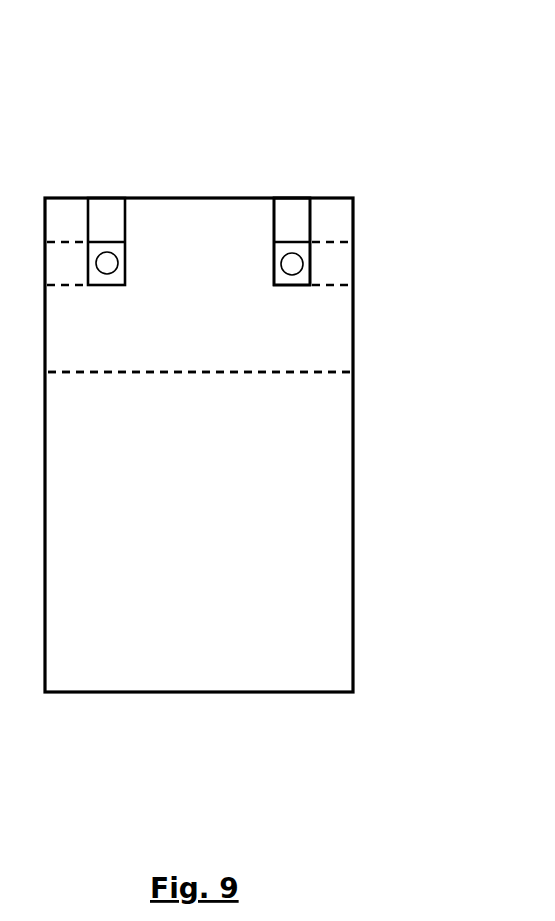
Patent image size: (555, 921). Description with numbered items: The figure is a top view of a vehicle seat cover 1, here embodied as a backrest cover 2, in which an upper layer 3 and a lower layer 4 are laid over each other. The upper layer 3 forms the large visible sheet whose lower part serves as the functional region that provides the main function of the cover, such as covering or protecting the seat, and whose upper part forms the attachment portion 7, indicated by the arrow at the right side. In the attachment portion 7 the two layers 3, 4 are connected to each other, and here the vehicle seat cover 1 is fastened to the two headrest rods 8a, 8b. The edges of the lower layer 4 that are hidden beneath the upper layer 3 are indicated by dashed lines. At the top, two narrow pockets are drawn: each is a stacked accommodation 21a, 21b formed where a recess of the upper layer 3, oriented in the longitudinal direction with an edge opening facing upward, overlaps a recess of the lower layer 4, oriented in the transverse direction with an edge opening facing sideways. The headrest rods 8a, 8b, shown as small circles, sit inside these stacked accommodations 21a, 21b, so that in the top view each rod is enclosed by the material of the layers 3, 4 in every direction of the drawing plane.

The vehicle seat cover 1 is at (243, 112).
The backrest cover 2 is at (245, 107).
The upper layer 3 is at (199, 498).
The lower layer 4 is at (290, 205).
The attachment portion 7 is at (375, 267).
The headrest rod 8a is at (108, 270).
The headrest rod 8b is at (295, 271).
The stacked accommodation 21a is at (113, 248).
The stacked accommodation 21b is at (287, 248).